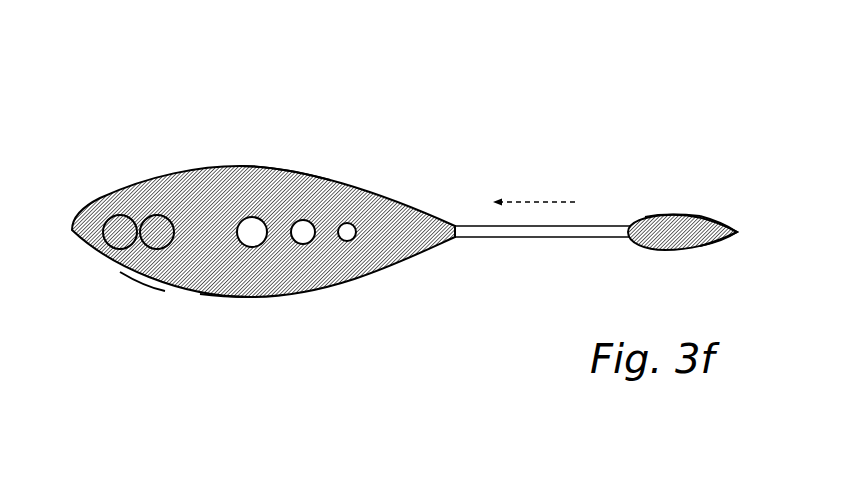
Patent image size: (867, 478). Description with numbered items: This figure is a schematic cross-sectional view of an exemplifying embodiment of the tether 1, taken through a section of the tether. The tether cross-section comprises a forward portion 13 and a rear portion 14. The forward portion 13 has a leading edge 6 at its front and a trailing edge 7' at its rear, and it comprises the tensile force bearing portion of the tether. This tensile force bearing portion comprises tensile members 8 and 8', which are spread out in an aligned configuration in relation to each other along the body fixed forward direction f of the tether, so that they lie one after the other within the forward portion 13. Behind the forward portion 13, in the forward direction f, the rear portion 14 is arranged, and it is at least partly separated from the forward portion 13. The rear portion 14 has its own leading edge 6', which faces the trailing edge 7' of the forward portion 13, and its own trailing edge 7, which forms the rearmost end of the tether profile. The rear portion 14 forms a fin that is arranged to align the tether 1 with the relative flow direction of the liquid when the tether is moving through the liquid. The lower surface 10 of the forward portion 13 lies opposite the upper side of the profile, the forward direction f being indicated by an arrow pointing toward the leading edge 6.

The fishing lure / device 1 is at (180, 138).
The leading edge 6 is at (251, 232).
The leading edge 6' is at (703, 229).
The trailing edge 7 is at (757, 219).
The trailing edge 7' is at (542, 278).
The tensile member 8 is at (113, 255).
The tensile member 8' is at (226, 315).
The lower surface 10 is at (150, 284).
The forward portion 13 is at (308, 173).
The rear portion 14 is at (680, 213).
The forward direction f is at (547, 202).